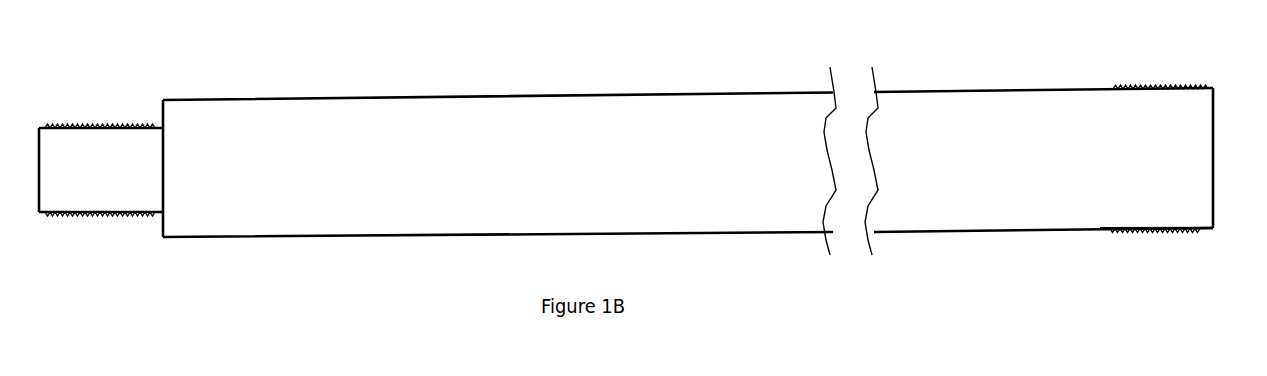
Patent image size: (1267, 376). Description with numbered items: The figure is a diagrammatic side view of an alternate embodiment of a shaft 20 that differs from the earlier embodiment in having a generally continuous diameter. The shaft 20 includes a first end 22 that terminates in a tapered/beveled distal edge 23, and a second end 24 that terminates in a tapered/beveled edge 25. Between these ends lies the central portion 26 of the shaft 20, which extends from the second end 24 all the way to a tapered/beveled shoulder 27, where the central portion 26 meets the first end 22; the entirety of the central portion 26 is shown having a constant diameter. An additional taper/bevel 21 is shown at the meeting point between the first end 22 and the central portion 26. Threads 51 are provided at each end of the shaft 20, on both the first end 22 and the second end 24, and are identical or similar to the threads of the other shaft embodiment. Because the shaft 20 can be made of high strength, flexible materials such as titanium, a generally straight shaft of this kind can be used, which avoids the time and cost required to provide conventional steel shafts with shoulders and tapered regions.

The shaft 20 is at (289, 268).
The taper/bevel 21 is at (160, 127).
The first end 22 is at (100, 215).
The tapered/beveled distal edge 23 is at (41, 128).
The second end 24 is at (1198, 233).
The tapered/beveled edge 25 is at (1216, 86).
The central portion 26 is at (632, 92).
The tapered/beveled shoulder 27 is at (163, 100).
The threads 51 is at (88, 127).